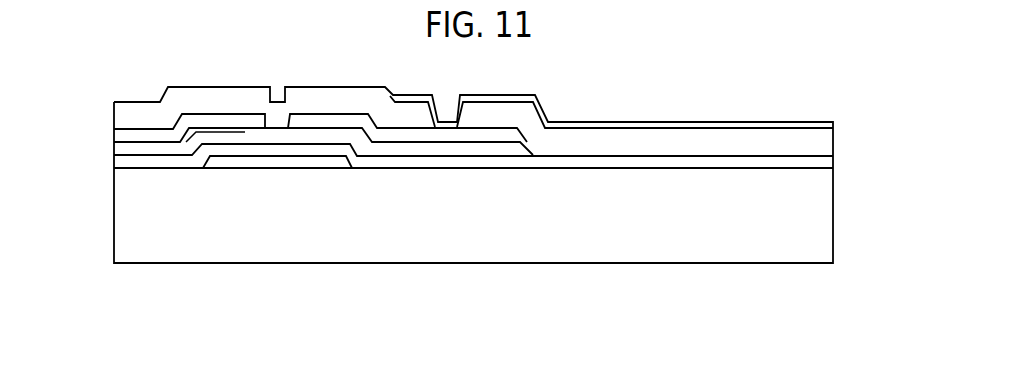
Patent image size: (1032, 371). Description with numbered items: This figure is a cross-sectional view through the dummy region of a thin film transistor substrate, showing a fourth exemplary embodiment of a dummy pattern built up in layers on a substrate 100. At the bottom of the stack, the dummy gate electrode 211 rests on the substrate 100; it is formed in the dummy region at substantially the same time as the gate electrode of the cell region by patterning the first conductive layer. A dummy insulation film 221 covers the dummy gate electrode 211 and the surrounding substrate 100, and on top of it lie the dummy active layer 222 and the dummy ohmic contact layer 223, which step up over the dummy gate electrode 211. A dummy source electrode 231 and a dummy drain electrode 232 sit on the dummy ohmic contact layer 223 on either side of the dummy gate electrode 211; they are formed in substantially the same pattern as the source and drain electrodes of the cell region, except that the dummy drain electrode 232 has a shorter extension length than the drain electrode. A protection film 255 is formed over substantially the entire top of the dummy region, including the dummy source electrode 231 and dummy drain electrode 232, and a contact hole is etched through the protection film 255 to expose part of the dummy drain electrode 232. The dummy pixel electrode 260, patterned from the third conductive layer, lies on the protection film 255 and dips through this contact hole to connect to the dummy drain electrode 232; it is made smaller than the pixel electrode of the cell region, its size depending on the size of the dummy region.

The substrate 100 is at (833, 232).
The dummy insulation film 221 is at (833, 165).
The dummy gate electrode 211 is at (278, 162).
The dummy active layer 222 is at (114, 155).
The dummy ohmic contact layer 223 is at (114, 142).
The dummy source electrode 231 is at (125, 135).
The dummy drain electrode 232 is at (405, 133).
The protection film 255 is at (833, 147).
The dummy pixel electrode 260 is at (833, 121).